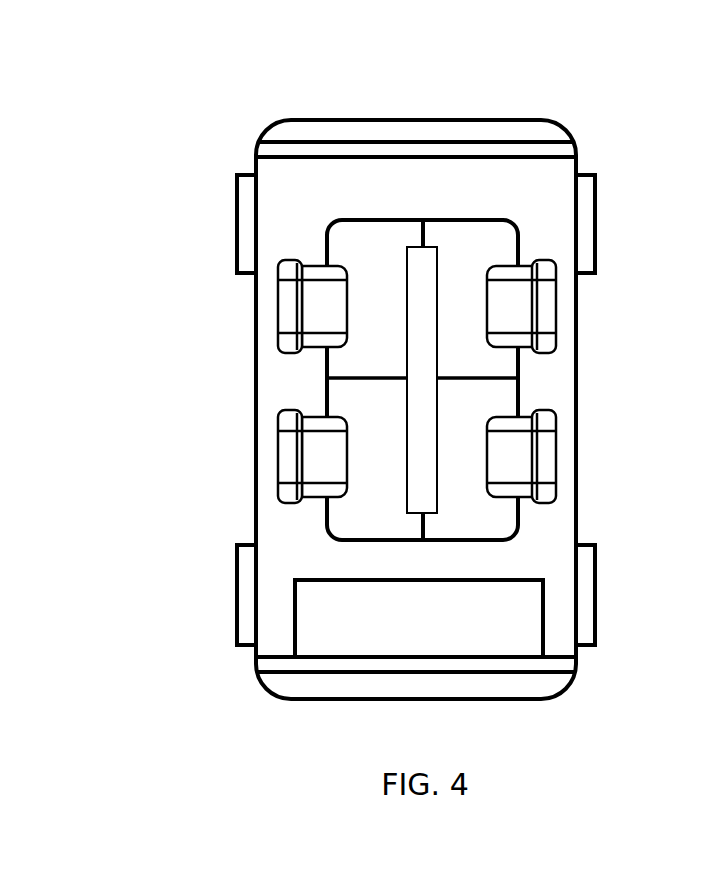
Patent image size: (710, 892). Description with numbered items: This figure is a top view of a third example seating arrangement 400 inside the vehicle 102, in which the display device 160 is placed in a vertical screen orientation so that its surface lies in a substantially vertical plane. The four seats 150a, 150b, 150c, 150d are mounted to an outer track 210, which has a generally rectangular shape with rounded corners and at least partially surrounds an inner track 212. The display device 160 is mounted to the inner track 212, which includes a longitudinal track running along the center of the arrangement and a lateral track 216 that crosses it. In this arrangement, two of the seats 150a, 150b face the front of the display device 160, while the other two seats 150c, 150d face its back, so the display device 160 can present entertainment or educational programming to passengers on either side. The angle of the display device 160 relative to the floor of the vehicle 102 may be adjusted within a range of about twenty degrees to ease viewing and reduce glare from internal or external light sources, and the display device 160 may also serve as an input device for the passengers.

The vehicle 102 is at (280, 142).
The seating arrangement 400 is at (283, 240).
The seat 150a is at (283, 323).
The seat 150b is at (282, 470).
The seat 150c is at (553, 311).
The seat 150d is at (555, 467).
The outer track 210 is at (489, 232).
The inner track 212 is at (420, 246).
The lateral track 216 is at (495, 379).
The display device 160 is at (437, 500).